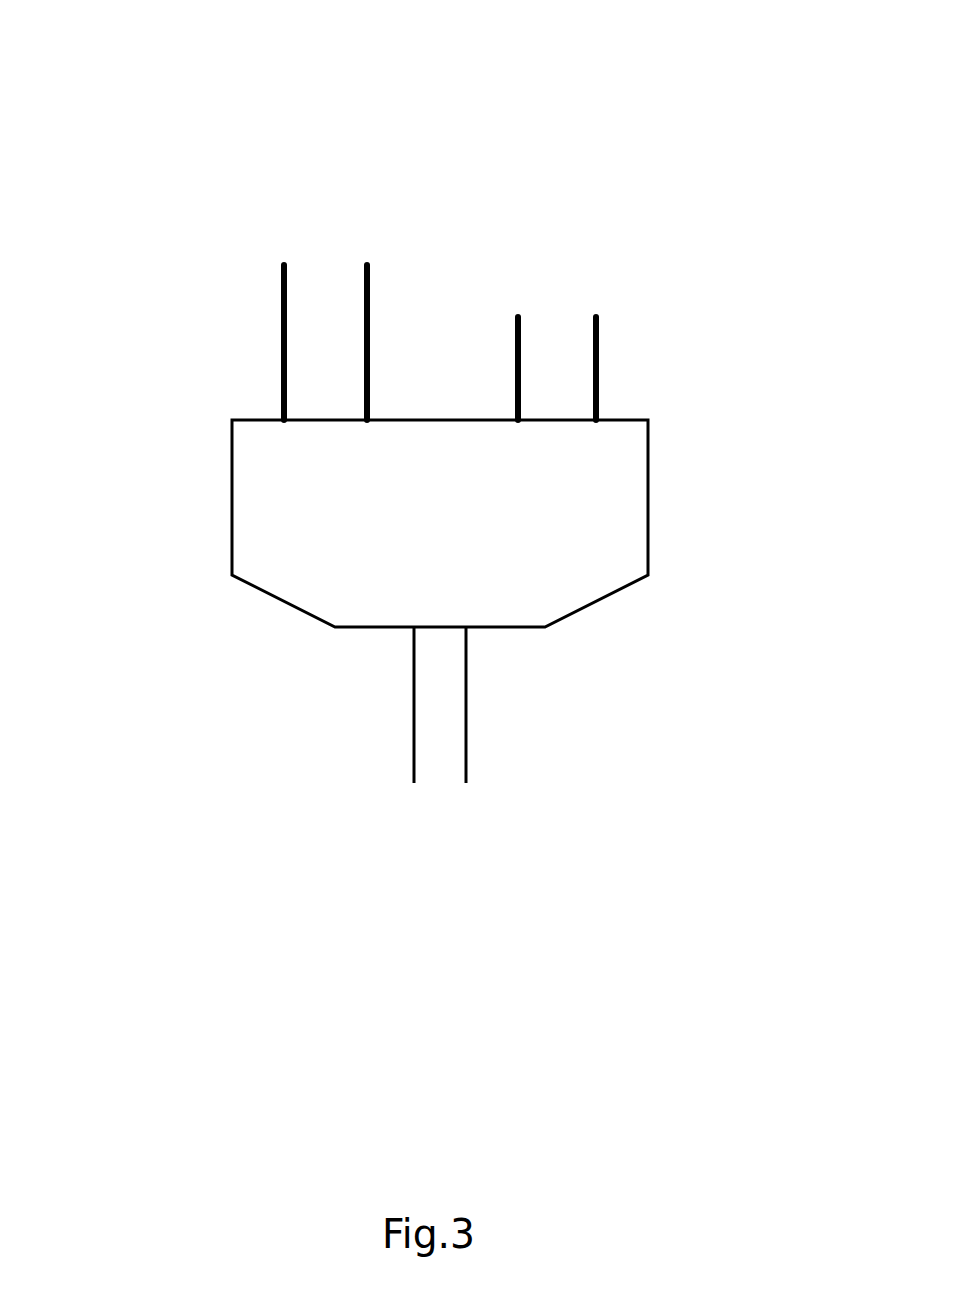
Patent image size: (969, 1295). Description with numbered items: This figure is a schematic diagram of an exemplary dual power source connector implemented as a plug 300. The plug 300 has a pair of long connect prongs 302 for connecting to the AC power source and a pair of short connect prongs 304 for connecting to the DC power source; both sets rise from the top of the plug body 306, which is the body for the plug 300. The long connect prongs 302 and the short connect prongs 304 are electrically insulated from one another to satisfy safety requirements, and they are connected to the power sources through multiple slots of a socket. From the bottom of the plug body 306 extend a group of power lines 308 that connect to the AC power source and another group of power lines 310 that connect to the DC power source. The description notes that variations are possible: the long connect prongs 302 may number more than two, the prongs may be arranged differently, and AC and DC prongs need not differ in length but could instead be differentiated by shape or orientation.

The dual power source plug 300 is at (556, 168).
The long connect prongs 302 is at (264, 264).
The short connect prongs 304 is at (620, 318).
The plug body 306 is at (648, 515).
The AC power lines 308 is at (414, 718).
The DC power lines 310 is at (466, 717).